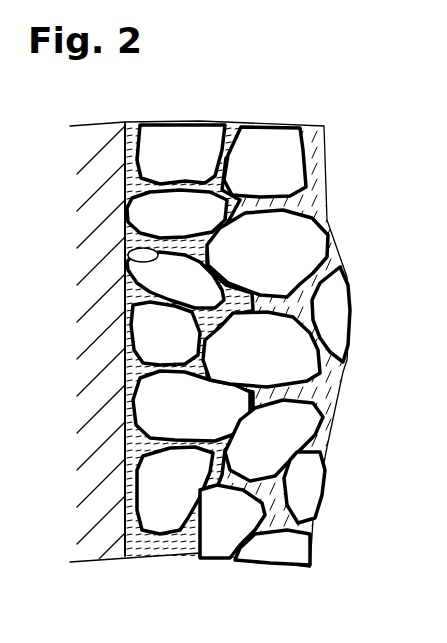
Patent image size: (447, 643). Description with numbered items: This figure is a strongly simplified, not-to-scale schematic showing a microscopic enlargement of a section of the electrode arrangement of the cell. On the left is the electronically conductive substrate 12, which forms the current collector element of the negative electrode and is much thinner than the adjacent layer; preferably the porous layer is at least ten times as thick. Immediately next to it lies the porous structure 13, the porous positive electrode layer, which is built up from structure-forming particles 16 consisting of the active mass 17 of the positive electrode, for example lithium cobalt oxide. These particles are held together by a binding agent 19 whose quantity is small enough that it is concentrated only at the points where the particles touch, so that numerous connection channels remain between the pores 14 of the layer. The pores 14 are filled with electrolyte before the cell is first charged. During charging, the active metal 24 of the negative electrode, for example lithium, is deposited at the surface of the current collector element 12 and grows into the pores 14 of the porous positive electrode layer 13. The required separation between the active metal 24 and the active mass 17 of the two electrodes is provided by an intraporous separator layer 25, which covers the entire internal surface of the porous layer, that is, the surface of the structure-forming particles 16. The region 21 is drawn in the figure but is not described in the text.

The electronically conductive substrate 12 is at (100, 540).
The porous structure 13 is at (246, 112).
The pores 14 is at (153, 408).
The structure-forming particles 16 is at (177, 200).
The active mass 17 is at (289, 155).
The binding agent 19 is at (140, 256).
The outer layer region 21 is at (307, 392).
The active metal 24 is at (155, 545).
The intraporous separator layer 25 is at (130, 480).